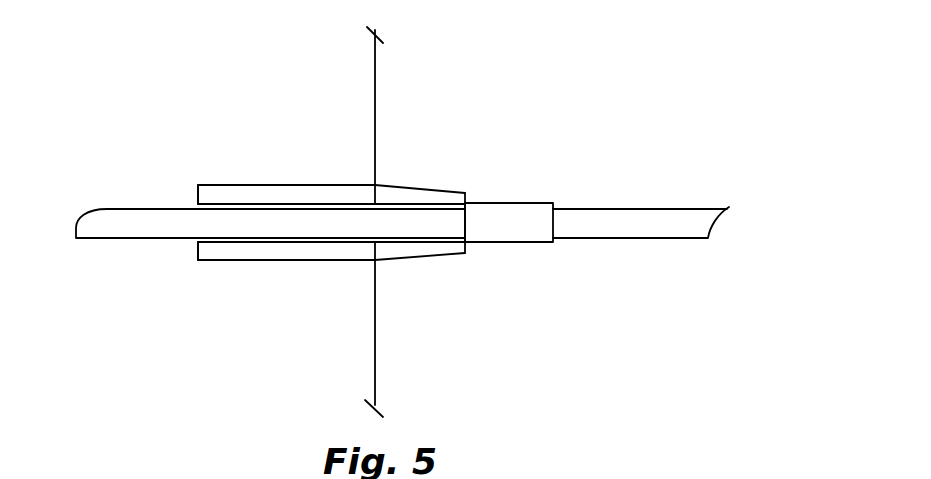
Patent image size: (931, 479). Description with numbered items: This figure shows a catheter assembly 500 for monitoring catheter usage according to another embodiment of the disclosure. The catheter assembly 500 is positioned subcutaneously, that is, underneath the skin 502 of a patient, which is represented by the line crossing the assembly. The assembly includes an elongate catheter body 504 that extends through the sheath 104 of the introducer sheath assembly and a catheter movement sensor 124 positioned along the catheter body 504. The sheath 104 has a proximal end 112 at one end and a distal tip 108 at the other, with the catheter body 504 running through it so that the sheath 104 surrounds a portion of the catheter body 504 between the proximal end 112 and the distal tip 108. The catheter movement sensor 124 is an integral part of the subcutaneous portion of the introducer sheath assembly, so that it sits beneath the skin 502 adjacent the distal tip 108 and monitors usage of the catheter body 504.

The catheter assembly 500 is at (552, 120).
The skin 502 is at (375, 110).
The catheter body 504 is at (162, 208).
The sheath 104 is at (273, 185).
The proximal end 112 is at (200, 187).
The distal tip 108 is at (465, 194).
The catheter movement sensor 124 is at (527, 203).